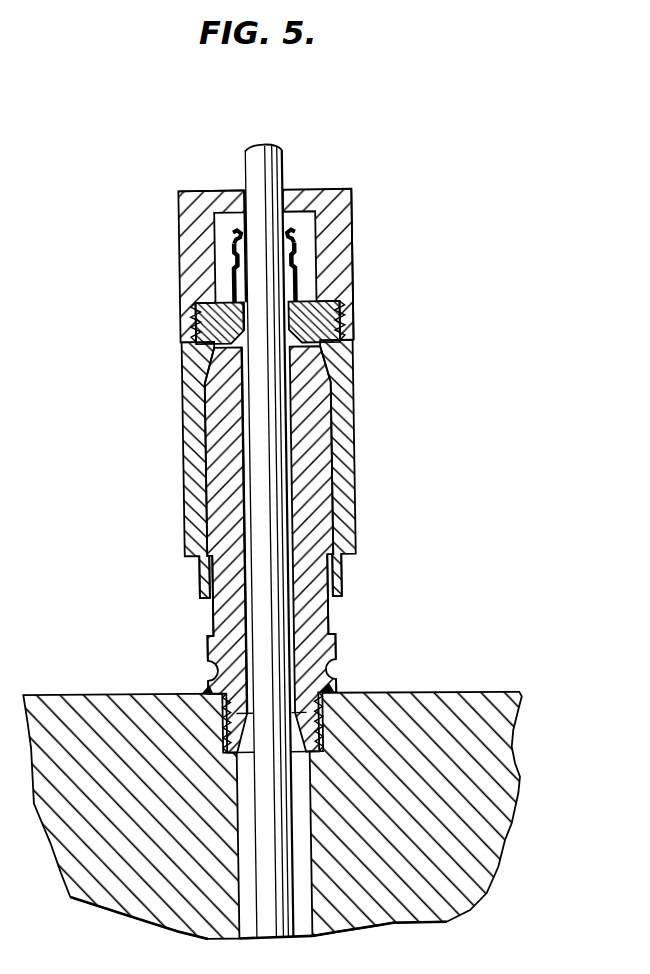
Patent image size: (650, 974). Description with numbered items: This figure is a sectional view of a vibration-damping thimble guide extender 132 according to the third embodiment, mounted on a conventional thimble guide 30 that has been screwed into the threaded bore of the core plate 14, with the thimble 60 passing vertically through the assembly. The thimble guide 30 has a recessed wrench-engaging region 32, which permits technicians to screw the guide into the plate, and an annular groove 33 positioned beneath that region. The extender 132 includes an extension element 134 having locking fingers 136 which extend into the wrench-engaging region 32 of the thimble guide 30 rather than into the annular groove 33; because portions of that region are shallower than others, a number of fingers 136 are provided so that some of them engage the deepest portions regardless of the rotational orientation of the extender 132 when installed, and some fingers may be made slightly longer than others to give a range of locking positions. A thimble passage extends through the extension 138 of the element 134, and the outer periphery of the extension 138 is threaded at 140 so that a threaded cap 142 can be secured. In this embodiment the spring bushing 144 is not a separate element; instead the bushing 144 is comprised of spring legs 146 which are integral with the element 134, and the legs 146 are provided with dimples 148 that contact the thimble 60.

The core plate 14 is at (503, 738).
The thimble guide 30 is at (320, 460).
The wrench-engaging region 32 is at (332, 619).
The annular groove 33 is at (333, 668).
The thimble 60 is at (273, 924).
The vibration-damping extender 132 is at (413, 319).
The extension element 134 is at (353, 410).
The locking fingers 136 is at (198, 570).
The extension 138 is at (317, 320).
The threads 140 is at (190, 325).
The threaded cap 142 is at (337, 188).
The spring bushing 144 is at (165, 253).
The spring legs 146 is at (300, 268).
The dimples 148 is at (297, 247).